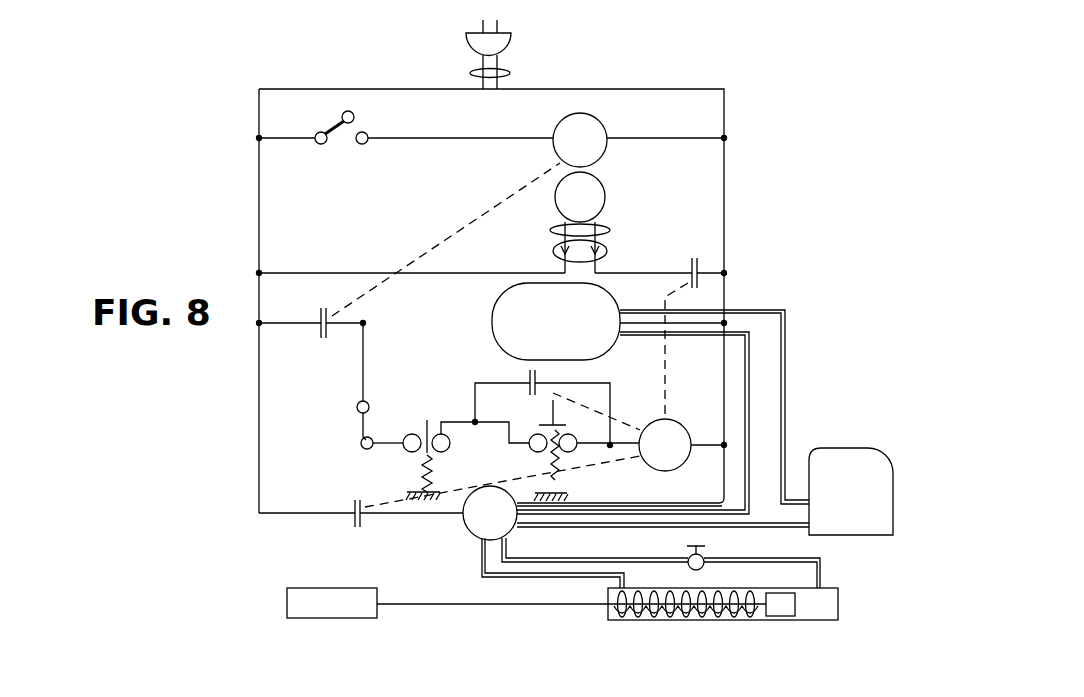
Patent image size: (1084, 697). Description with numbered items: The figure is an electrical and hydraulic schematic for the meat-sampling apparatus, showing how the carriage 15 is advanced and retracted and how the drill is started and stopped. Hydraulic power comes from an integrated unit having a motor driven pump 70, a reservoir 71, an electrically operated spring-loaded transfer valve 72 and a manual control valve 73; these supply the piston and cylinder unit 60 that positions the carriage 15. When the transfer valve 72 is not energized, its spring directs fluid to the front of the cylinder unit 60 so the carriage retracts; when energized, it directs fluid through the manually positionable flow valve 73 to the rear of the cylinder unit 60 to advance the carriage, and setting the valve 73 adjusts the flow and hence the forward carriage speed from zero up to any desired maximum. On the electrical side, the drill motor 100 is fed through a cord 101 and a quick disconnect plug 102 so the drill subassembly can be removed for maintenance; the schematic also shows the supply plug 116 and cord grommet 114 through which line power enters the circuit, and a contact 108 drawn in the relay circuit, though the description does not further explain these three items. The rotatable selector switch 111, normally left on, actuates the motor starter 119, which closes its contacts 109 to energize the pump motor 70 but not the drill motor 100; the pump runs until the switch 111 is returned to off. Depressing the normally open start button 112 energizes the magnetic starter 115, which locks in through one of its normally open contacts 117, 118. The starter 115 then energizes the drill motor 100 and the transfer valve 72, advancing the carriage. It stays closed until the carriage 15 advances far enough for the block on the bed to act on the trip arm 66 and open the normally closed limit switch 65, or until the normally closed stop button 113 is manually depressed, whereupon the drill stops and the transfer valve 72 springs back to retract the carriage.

The carriage 15 is at (286, 602).
The piston and cylinder unit 60 is at (677, 621).
The limit switch 65 is at (352, 412).
The trip arm 66 is at (358, 428).
The motor driven pump 70 is at (492, 308).
The reservoir 71 is at (875, 432).
The transfer valve 72 is at (464, 522).
The manual control valve 73 is at (708, 562).
The motor 100 is at (598, 196).
The cord 101 is at (606, 232).
The quick disconnect plug 102 is at (607, 250).
The relay contact 108 is at (704, 269).
The contacts 109 is at (316, 334).
The selector switch 111 is at (333, 143).
The start button 112 is at (572, 428).
The stop button 113 is at (407, 428).
The power cord 114 is at (510, 73).
The magnetic starter 115 is at (673, 424).
The plug 116 is at (513, 38).
The normally open contact 117 is at (346, 520).
The normally open contact 118 is at (524, 377).
The motor starter 119 is at (606, 131).